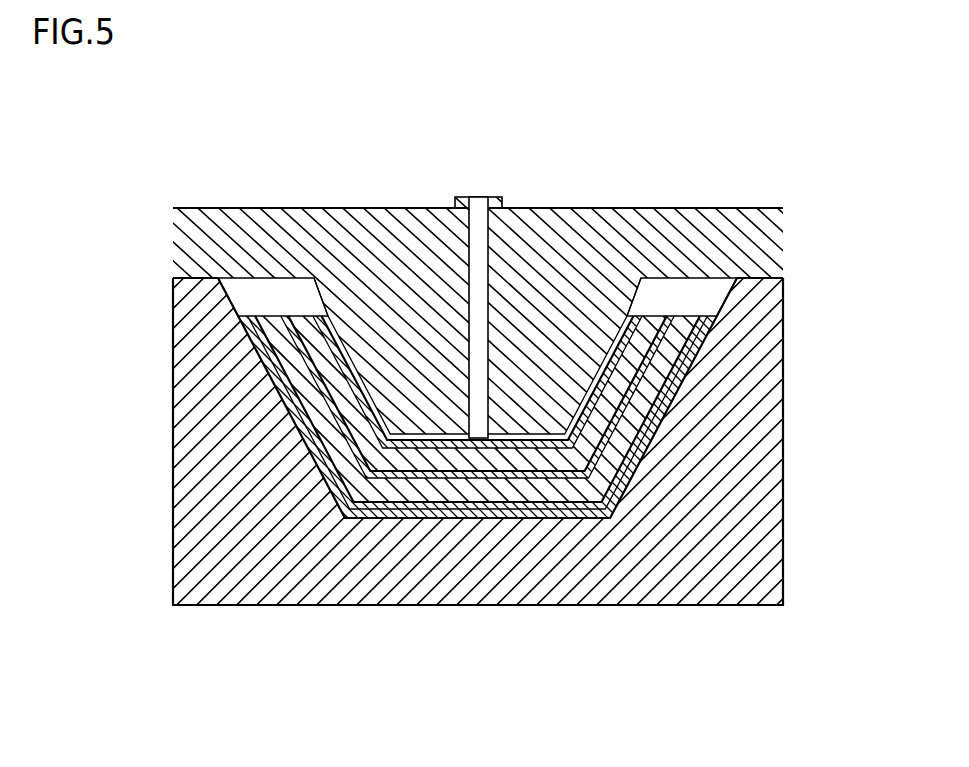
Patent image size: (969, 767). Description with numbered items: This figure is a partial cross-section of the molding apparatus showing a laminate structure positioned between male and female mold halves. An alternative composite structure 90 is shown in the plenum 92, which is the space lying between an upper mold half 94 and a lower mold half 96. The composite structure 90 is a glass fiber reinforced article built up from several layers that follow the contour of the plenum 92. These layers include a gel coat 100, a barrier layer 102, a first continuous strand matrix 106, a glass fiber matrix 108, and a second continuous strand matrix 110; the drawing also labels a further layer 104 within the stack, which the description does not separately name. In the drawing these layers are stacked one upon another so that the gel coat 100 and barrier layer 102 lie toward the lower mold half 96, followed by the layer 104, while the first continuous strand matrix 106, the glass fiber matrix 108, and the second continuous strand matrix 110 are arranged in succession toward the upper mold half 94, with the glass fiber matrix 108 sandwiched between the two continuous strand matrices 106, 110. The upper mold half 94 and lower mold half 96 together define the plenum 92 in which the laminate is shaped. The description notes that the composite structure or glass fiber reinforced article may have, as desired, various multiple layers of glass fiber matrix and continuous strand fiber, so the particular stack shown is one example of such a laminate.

The composite structure 90 is at (256, 272).
The plenum 92 is at (687, 294).
The upper mold half 94 is at (373, 233).
The lower mold half 96 is at (267, 583).
The gel coat 100 is at (495, 514).
The barrier layer 102 is at (575, 503).
The third layer 104 is at (605, 463).
The first continuous strand matrix 106 is at (614, 409).
The glass fiber matrix 108 is at (625, 363).
The second continuous strand matrix 110 is at (625, 328).